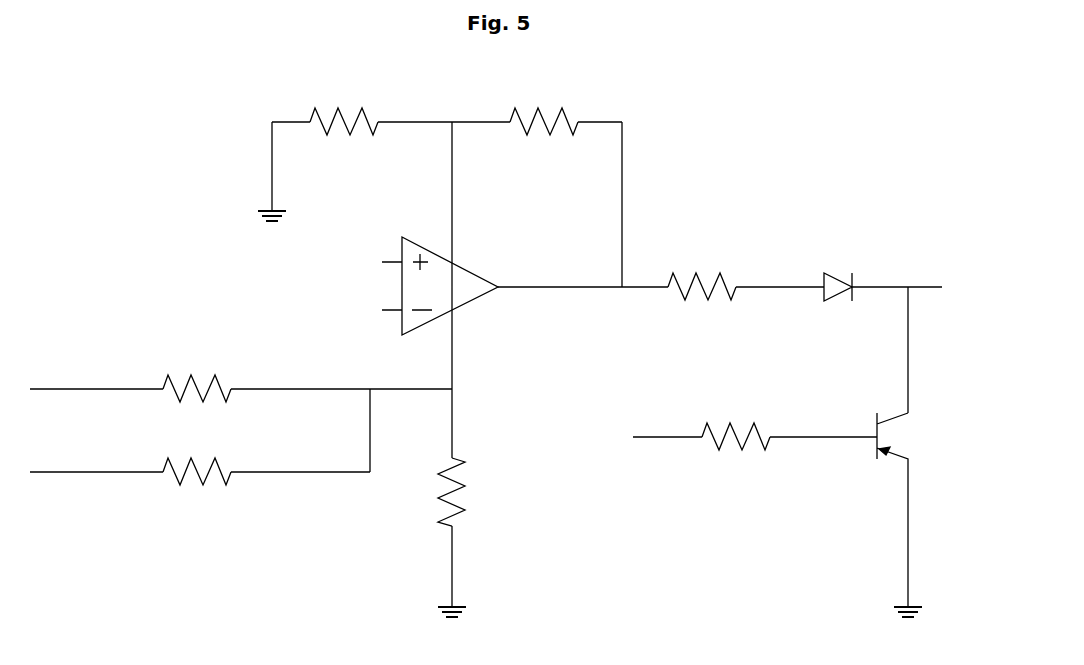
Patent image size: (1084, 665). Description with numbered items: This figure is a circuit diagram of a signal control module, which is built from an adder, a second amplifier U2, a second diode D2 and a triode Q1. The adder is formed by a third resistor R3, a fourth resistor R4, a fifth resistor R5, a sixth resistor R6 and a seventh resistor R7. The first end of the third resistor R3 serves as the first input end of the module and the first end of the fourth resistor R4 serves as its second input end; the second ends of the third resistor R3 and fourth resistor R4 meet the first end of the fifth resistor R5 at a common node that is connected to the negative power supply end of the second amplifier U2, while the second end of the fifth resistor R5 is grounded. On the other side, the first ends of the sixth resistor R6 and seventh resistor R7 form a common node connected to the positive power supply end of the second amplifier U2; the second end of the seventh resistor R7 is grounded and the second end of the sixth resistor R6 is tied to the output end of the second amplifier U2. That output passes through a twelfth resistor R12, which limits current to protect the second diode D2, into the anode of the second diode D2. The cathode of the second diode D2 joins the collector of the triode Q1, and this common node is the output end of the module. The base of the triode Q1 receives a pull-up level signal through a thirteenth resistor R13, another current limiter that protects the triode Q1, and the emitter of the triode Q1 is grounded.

The seventh resistor R7 is at (344, 112).
The sixth resistor R6 is at (544, 112).
The twelfth resistor R12 is at (702, 273).
The thirteenth resistor R13 is at (736, 426).
The third resistor R3 is at (197, 378).
The fourth resistor R4 is at (197, 462).
The fifth resistor R5 is at (468, 492).
The second amplifier U2 is at (444, 286).
The second diode D2 is at (837, 270).
The triode Q1 is at (909, 510).